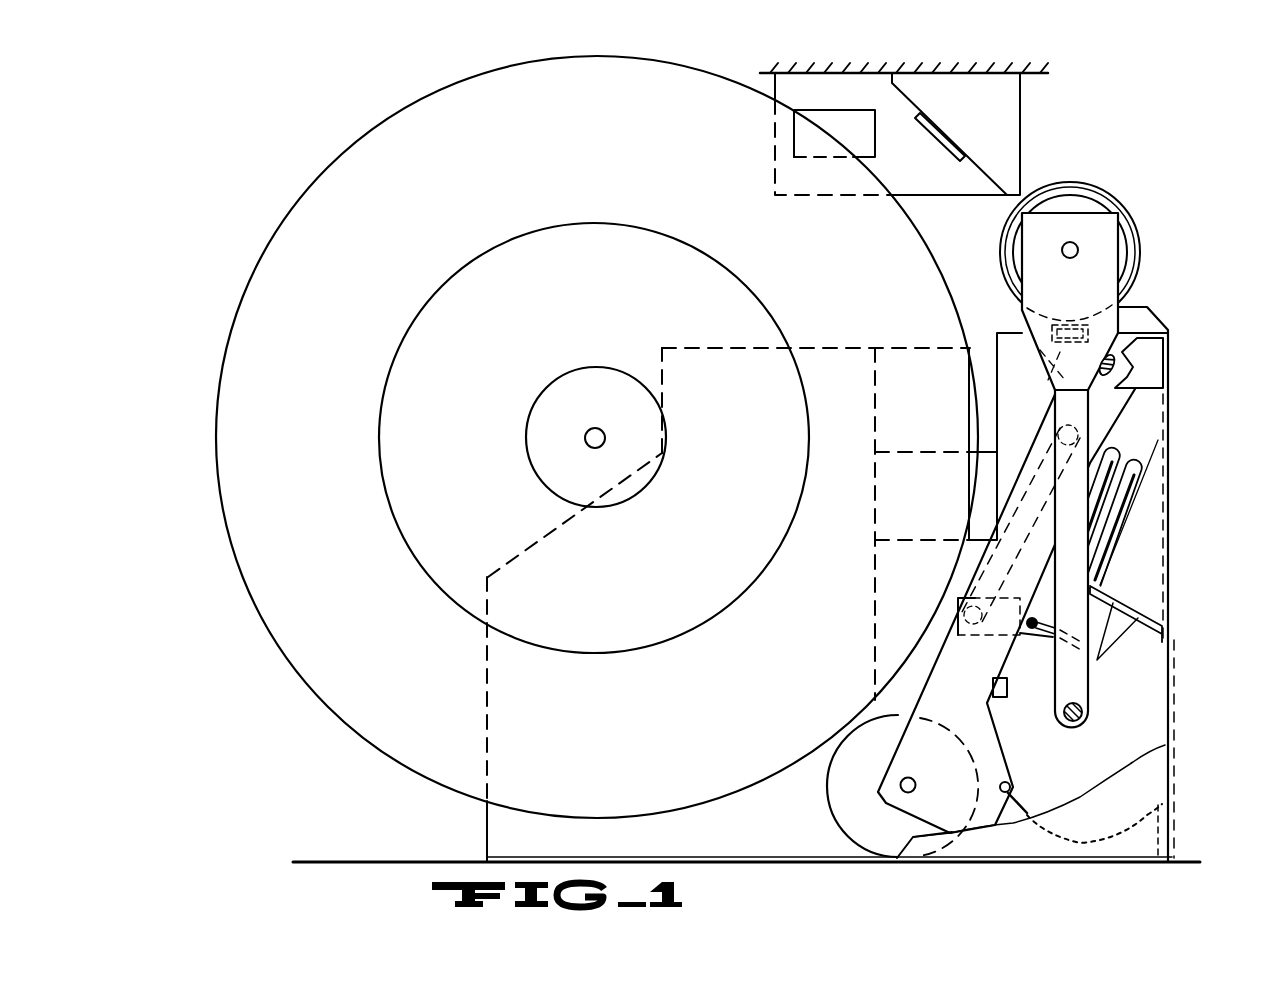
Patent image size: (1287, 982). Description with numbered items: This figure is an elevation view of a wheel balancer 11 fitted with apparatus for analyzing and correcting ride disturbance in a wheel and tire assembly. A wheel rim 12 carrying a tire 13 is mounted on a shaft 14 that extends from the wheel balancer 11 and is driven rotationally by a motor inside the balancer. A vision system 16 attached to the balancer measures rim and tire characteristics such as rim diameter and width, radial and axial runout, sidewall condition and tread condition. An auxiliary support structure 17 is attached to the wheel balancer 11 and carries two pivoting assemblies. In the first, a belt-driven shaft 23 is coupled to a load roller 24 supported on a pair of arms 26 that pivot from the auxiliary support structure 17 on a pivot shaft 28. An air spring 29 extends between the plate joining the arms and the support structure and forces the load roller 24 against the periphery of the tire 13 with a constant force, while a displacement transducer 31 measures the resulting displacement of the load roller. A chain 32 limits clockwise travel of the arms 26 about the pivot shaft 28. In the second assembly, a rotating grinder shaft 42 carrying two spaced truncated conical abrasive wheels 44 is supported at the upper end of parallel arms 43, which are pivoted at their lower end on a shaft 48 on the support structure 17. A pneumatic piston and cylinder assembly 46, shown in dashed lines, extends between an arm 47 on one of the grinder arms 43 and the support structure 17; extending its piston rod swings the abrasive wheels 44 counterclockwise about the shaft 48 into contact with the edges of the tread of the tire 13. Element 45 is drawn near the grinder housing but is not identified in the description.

The wheel balancer 11 is at (487, 822).
The wheel rim 12 is at (434, 425).
The tire 13 is at (274, 424).
The shaft 14 is at (600, 430).
The vision system 16 is at (915, 197).
The auxiliary support structure 17 is at (1172, 385).
The shaft 23 is at (914, 782).
The load roller 24 is at (850, 800).
The arms 26 is at (1005, 750).
The pivot shaft 28 is at (1114, 355).
The air spring 29 is at (1147, 465).
The displacement transducer 31 is at (1050, 637).
The chain 32 is at (1028, 815).
The shaft 42 is at (1074, 257).
The parallel arms 43 is at (1025, 308).
The abrasive wheels 44 is at (1112, 205).
The contact 45 is at (1040, 330).
The pneumatic piston and cylinder assembly 46 is at (1037, 466).
The arm 47 is at (1005, 640).
The shaft 48 is at (1085, 713).